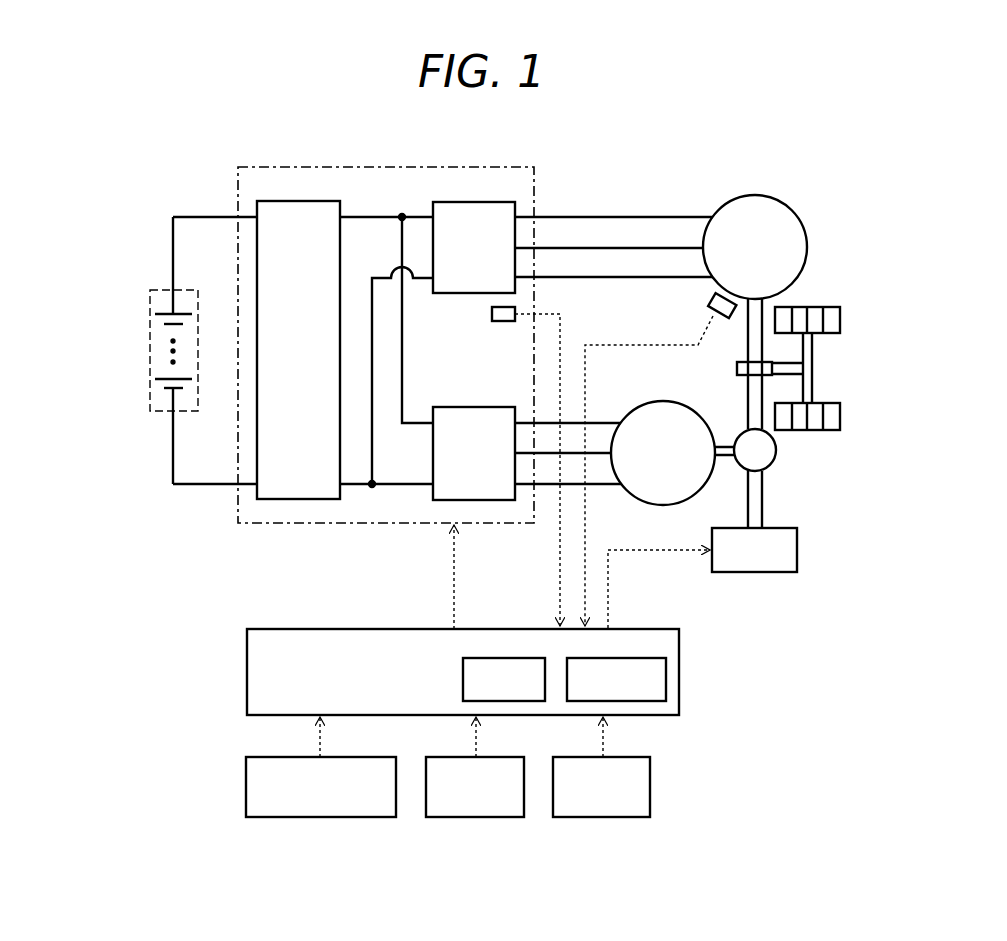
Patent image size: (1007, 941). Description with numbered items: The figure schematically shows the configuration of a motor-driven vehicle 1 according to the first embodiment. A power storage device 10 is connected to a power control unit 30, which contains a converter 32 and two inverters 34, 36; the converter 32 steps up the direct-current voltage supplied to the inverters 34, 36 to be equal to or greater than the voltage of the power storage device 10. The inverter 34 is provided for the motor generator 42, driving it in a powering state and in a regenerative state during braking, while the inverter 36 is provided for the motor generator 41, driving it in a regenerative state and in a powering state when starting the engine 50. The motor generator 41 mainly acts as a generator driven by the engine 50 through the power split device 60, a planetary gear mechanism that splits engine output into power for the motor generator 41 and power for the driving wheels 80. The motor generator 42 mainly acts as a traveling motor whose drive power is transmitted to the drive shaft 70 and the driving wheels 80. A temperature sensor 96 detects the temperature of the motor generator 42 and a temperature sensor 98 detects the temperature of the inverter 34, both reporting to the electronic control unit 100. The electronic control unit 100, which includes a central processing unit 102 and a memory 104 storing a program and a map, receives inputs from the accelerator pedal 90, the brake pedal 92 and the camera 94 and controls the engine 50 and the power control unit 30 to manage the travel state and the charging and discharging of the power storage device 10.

The motor-driven vehicle 1 is at (90, 182).
The power storage device 10 is at (150, 355).
The power control unit 30 is at (381, 167).
The converter 32 is at (300, 201).
The inverter 34 is at (476, 202).
The inverter 36 is at (476, 407).
The motor generator 41 is at (686, 403).
The motor generator 42 is at (770, 197).
The engine 50 is at (776, 572).
The power split device 60 is at (770, 462).
The drive shaft 70 is at (812, 374).
The driving wheels 80 is at (828, 432).
The accelerator pedal 90 is at (320, 817).
The brake pedal 92 is at (476, 817).
The camera 94 is at (603, 817).
The temperature sensor 96 is at (711, 300).
The temperature sensor 98 is at (492, 314).
The electronic control unit 100 is at (637, 629).
The central processing unit 102 is at (516, 658).
The memory 104 is at (615, 658).